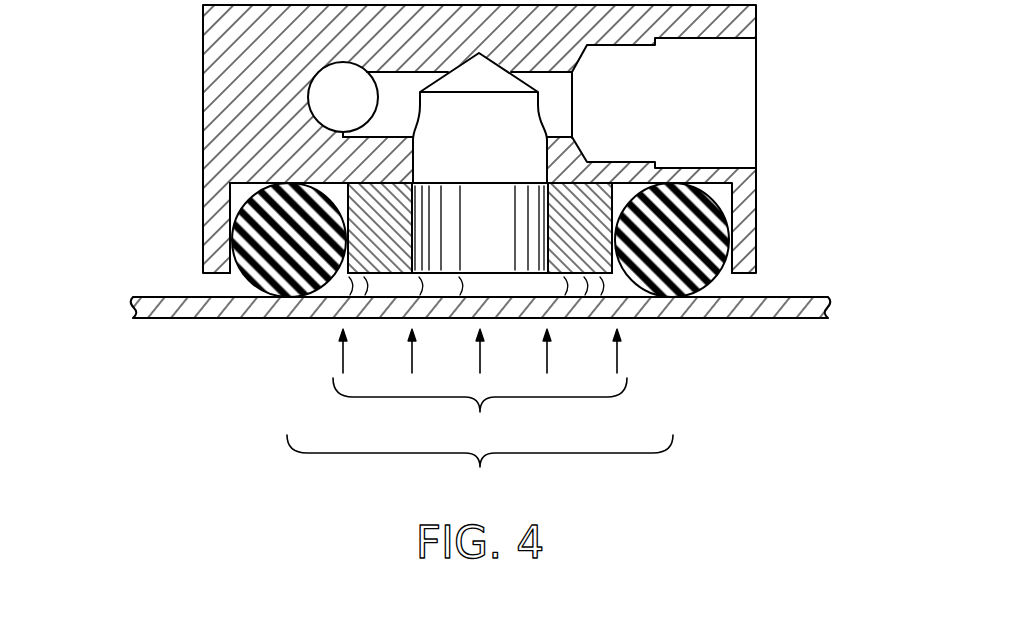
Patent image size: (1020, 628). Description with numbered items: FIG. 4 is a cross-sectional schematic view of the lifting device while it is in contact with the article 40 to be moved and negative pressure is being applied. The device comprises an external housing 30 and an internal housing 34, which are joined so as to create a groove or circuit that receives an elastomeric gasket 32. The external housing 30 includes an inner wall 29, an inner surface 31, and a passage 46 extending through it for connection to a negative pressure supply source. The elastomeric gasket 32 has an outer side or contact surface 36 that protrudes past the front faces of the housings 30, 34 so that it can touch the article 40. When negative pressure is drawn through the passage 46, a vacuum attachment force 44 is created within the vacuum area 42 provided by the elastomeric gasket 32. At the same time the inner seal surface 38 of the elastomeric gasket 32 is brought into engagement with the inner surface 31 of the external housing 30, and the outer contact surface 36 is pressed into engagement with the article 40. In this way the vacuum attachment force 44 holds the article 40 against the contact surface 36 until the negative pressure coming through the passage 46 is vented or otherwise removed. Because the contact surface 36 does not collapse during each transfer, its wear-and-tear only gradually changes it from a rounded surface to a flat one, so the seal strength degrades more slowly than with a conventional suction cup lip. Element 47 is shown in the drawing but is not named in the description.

The inner wall 29 is at (230, 193).
The external housing 30 is at (204, 45).
The inner surface 31 is at (338, 198).
The elastomeric gasket 32 is at (263, 243).
The internal housing 34 is at (381, 275).
The contact surface 36 is at (286, 297).
The inner seal surface 38 is at (282, 199).
The article 40 is at (815, 318).
The vacuum area 42 is at (480, 469).
The vacuum attachment force 44 is at (480, 388).
The passage 46 is at (746, 70).
The valve member 47 is at (503, 257).